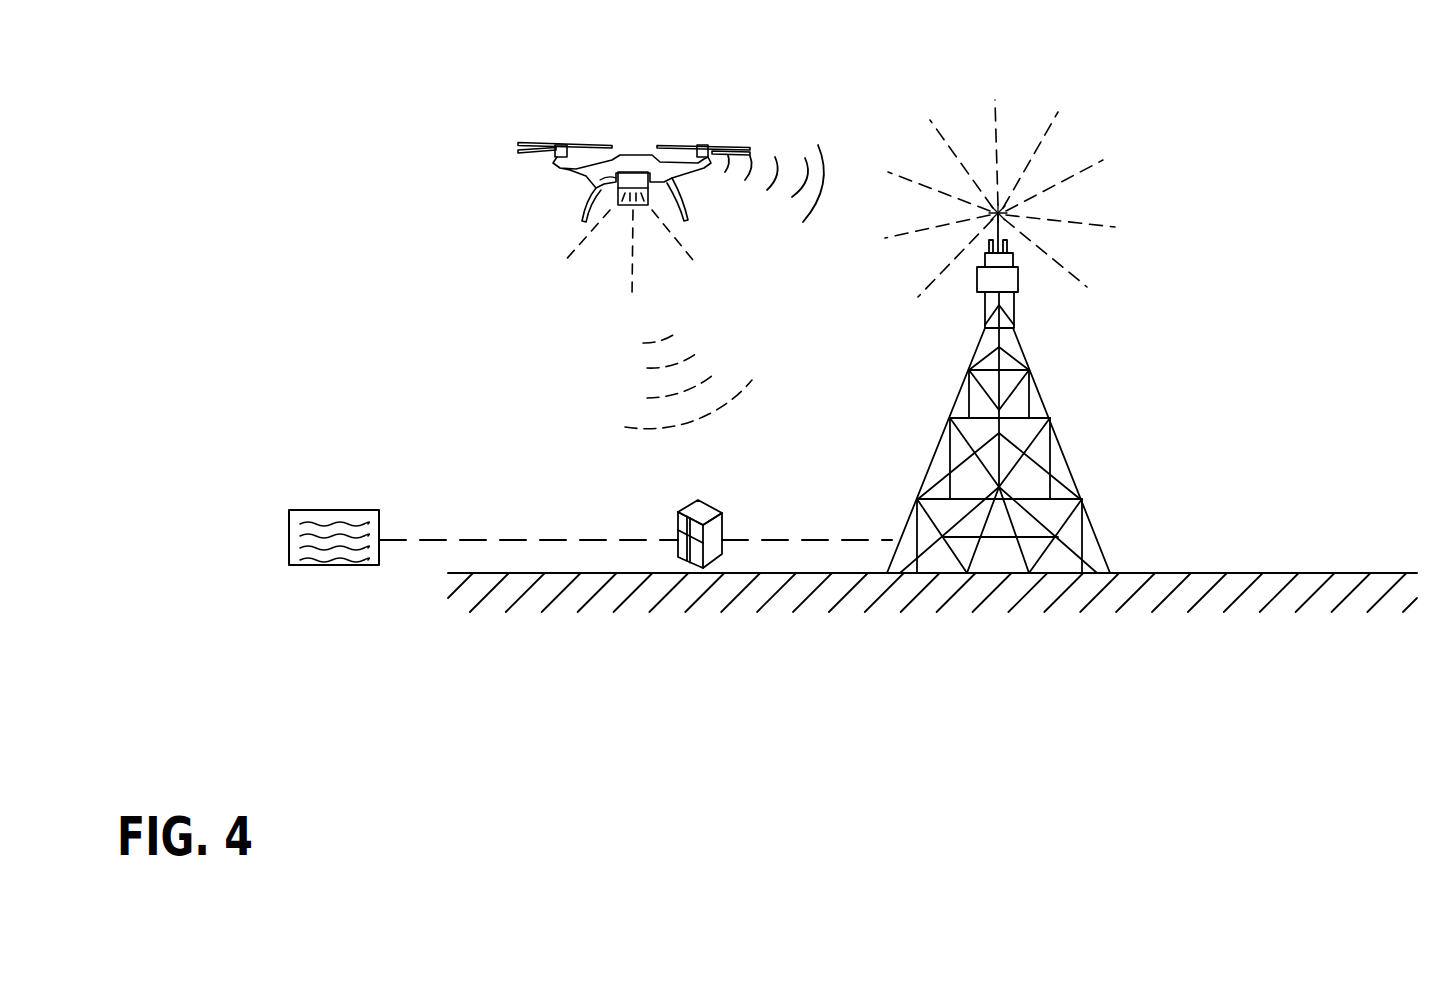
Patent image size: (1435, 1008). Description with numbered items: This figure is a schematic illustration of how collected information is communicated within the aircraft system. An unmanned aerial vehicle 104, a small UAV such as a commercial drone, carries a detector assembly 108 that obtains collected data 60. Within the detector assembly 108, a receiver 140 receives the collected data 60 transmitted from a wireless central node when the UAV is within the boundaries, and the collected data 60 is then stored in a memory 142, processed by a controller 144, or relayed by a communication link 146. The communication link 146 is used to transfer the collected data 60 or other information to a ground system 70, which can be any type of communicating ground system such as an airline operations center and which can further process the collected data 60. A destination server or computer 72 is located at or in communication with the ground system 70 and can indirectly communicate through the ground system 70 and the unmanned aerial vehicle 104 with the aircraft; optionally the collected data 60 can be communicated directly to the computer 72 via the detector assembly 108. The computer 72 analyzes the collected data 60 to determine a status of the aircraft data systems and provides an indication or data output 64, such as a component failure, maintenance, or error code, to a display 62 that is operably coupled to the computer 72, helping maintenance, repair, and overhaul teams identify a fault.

The collected data 60 is at (822, 157).
The display 62 is at (336, 510).
The indication or data output 64 is at (324, 562).
The ground system 70 is at (1072, 417).
The destination server or computer 72 is at (698, 500).
The unmanned aerial vehicle 104 is at (561, 143).
The detector assembly 108 is at (616, 179).
The receiver 140 is at (632, 172).
The memory 142 is at (571, 252).
The controller 144 is at (636, 270).
The communication link 146 is at (696, 252).